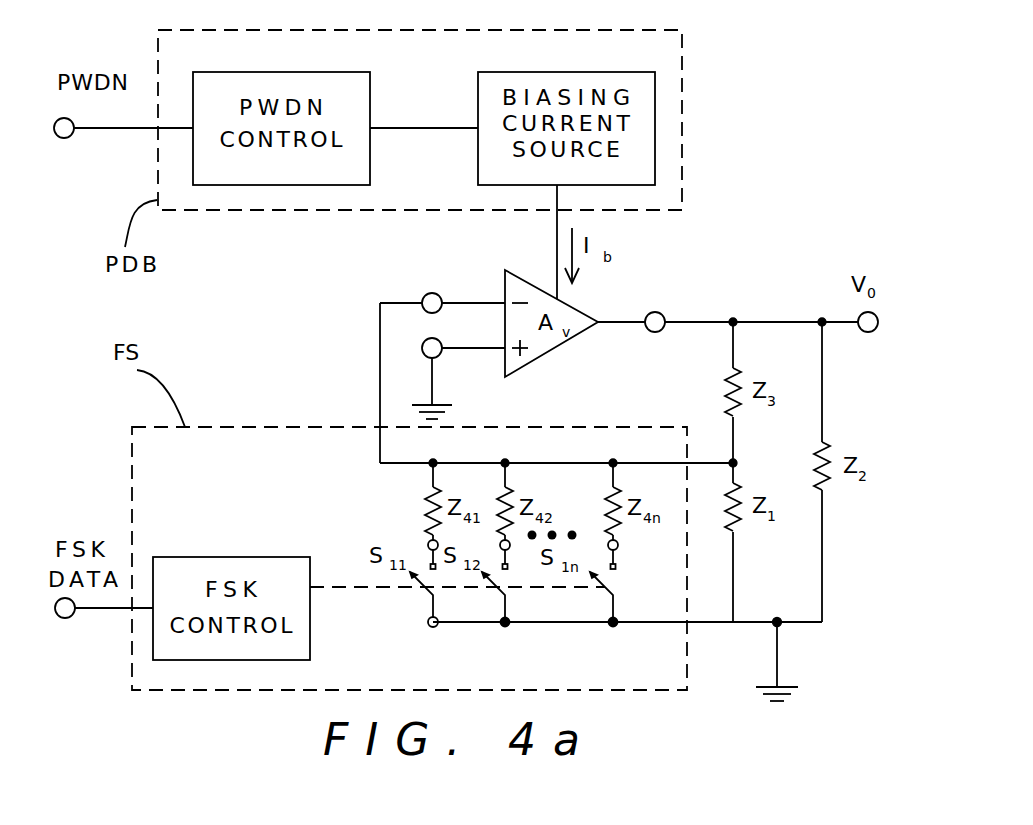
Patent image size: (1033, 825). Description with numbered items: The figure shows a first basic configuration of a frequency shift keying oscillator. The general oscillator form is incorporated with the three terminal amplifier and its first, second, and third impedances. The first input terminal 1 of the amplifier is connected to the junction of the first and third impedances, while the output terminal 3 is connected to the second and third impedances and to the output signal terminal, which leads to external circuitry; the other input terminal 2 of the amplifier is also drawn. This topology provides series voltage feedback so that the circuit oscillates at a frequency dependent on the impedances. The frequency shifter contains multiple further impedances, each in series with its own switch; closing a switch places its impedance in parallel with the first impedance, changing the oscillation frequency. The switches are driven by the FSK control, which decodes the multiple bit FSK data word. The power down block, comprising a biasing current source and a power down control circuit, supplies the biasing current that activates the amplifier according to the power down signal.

The first input terminal 1 is at (442, 287).
The non-inverting input terminal 2 is at (450, 378).
The output terminal 3 is at (728, 306).